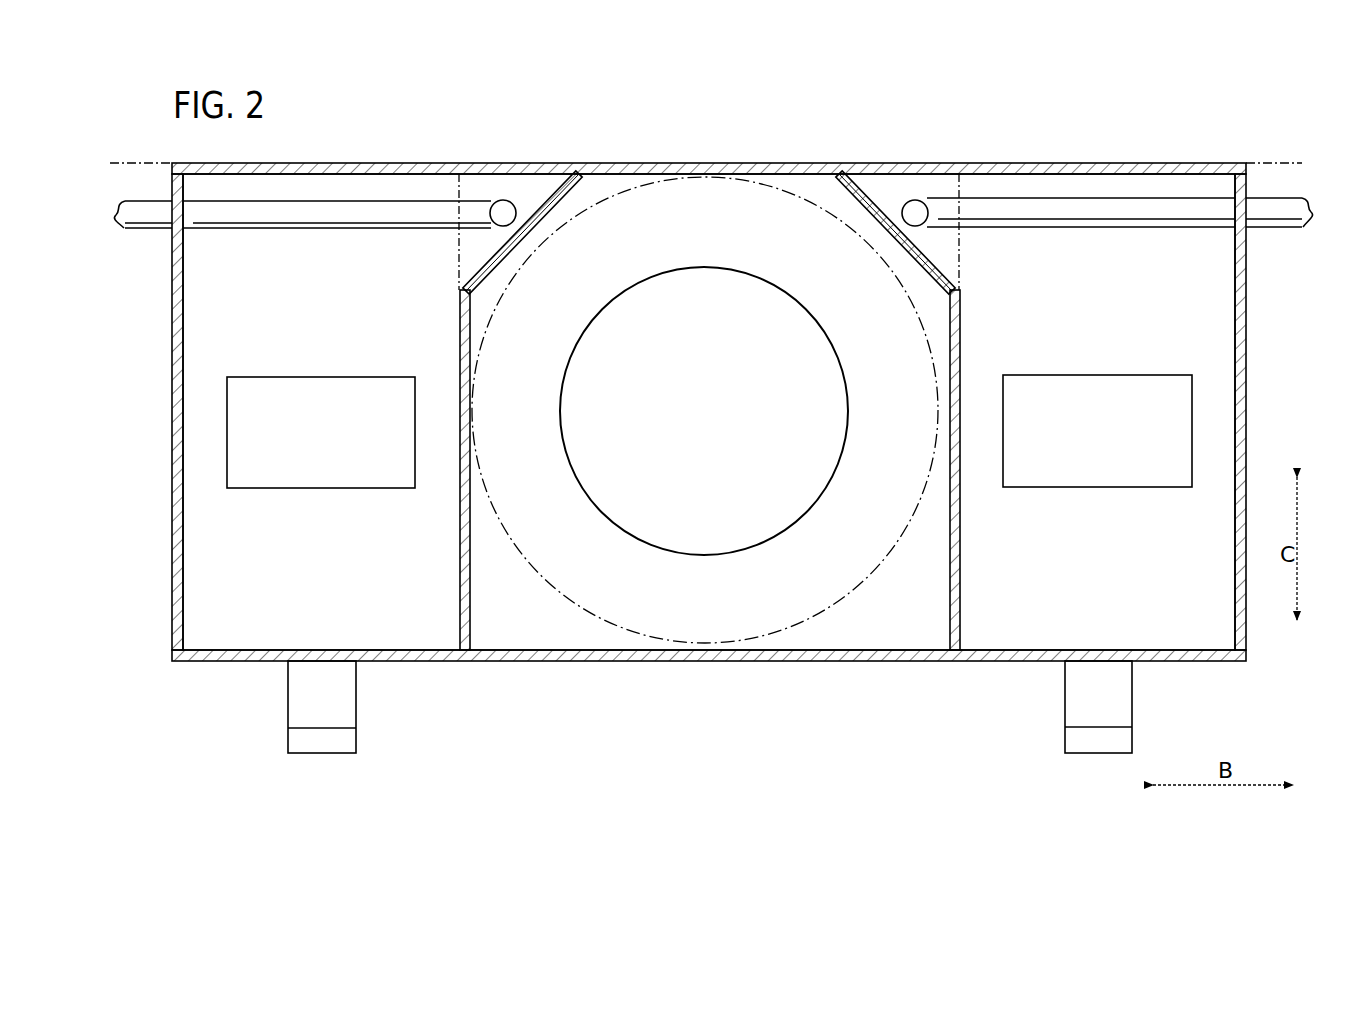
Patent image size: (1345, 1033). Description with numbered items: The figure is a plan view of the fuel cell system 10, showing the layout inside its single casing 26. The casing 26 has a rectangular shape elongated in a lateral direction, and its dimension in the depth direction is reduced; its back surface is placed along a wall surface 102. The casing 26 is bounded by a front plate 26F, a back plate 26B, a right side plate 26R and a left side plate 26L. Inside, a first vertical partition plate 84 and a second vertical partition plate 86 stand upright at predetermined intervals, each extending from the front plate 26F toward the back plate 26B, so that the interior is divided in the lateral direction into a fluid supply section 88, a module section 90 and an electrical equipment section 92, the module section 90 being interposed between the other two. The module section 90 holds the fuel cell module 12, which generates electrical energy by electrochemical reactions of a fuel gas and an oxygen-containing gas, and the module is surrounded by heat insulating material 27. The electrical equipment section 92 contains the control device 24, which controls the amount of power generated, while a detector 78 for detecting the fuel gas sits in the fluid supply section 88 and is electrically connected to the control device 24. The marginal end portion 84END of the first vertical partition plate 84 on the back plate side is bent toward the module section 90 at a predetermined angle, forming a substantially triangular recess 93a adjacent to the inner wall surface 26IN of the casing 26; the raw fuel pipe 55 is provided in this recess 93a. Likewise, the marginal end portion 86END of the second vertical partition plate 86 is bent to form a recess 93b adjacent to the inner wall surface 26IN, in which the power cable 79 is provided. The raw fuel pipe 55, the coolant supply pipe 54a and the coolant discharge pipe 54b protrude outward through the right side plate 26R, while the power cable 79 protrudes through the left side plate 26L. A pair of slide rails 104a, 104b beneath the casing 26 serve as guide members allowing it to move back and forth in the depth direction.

The fuel cell system 10 is at (1201, 121).
The fuel cell module 12 is at (774, 278).
The control device 24 is at (388, 377).
The casing 26 is at (348, 160).
The back plate 26B is at (618, 170).
The front plate 26F is at (832, 662).
The left side plate 26L is at (172, 419).
The right side plate 26R is at (1248, 402).
The inner wall surface 26IN is at (784, 173).
The heat insulating material 27 is at (550, 587).
The raw fuel pipe 55 is at (918, 206).
The coolant supply pipe 54a is at (1120, 212).
The coolant discharge pipe 54b is at (1120, 212).
The detector 78 is at (1173, 375).
The power cable 79 is at (273, 213).
The first vertical partition plate 84 is at (963, 513).
The marginal end portion of the first vertical partition plate 84END is at (928, 252).
The second vertical partition plate 86 is at (458, 513).
The marginal end portion of the second vertical partition plate 86END is at (485, 260).
The fluid supply section 88 is at (1198, 290).
The module section 90 is at (823, 192).
The electrical equipment section 92 is at (195, 288).
The recess 93a is at (875, 182).
The recess 93b is at (538, 188).
The wall surface 102 is at (1268, 162).
The slide rail 104a is at (1112, 700).
The slide rail 104b is at (342, 700).